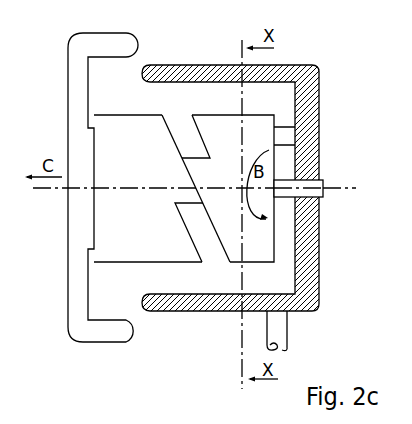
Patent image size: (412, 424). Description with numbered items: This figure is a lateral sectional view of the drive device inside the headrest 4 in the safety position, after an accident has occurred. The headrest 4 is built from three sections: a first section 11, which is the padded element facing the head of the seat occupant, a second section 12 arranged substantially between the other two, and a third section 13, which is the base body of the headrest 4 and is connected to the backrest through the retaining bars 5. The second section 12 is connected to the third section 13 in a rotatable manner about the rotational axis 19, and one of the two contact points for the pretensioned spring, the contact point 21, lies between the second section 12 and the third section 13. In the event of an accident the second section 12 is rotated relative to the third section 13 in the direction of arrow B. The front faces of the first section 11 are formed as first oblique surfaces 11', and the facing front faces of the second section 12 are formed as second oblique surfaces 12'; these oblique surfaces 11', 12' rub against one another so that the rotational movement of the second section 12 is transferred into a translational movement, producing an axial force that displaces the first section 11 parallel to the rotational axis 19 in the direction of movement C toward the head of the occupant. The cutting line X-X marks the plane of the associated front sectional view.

The headrest 4 is at (49, 96).
The first section 11 is at (75, 187).
The first oblique surfaces 11' is at (189, 138).
The second section 12 is at (234, 196).
The second oblique surfaces 12' is at (204, 138).
The third section 13 is at (303, 77).
The contact point 21 is at (284, 135).
The rotational axis 19 is at (334, 188).
The retaining bars 5 is at (277, 333).